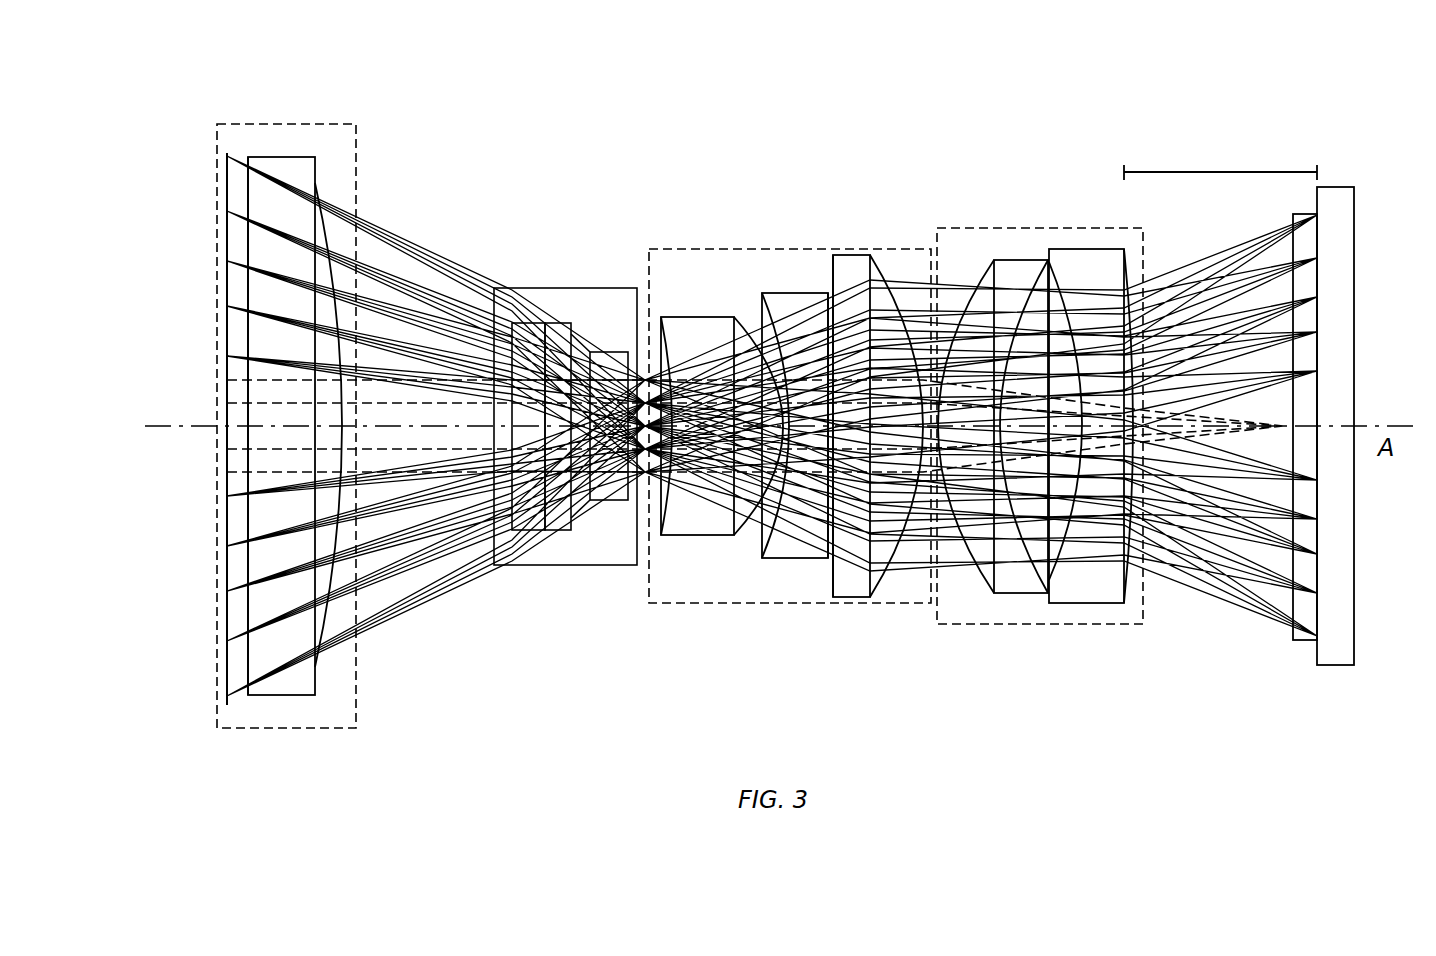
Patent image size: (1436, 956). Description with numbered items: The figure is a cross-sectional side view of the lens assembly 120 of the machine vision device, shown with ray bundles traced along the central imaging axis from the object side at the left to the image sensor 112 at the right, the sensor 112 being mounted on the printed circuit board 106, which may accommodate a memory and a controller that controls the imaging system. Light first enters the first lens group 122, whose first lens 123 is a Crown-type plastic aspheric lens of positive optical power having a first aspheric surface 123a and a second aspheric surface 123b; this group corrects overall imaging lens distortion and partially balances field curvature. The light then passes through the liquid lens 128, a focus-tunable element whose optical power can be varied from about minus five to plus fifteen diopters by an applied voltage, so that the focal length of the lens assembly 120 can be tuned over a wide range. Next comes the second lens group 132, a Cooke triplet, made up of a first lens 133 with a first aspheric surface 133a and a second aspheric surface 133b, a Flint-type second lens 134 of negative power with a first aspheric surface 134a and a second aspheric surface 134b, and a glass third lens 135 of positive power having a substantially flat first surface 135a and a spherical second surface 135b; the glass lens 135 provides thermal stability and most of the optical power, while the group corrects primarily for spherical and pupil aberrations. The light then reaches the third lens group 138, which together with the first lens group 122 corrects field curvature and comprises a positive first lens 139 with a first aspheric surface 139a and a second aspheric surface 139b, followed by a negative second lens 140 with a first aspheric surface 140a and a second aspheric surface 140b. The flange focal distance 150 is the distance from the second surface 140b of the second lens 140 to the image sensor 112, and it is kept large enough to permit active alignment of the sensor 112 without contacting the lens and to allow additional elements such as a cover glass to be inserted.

The lens assembly 120 is at (205, 102).
The first lens group 122 is at (294, 124).
The first lens 123 is at (282, 696).
The first aspheric surface 123a is at (248, 594).
The second aspheric surface 123b is at (340, 632).
The liquid lens 128 is at (555, 322).
The second lens group 132 is at (718, 249).
The first lens 133 is at (672, 537).
The first aspheric surface 133a is at (668, 365).
The second aspheric surface 133b is at (742, 537).
The second lens 134 is at (812, 562).
The first aspheric surface 134a is at (762, 325).
The second aspheric surface 134b is at (830, 570).
The third lens 135 is at (862, 598).
The first surface 135a is at (833, 300).
The second surface 135b is at (888, 256).
The third lens group 138 is at (1128, 228).
The first lens 139 is at (1010, 600).
The first aspheric surface 139a is at (990, 300).
The second aspheric surface 139b is at (1052, 290).
The second lens 140 is at (1110, 604).
The first aspheric surface 140a is at (1045, 600).
The second aspheric surface 140b is at (1138, 606).
The flange focal distance 150 is at (1220, 172).
The image sensor 112 is at (1300, 216).
The printed circuit board 106 is at (1335, 187).